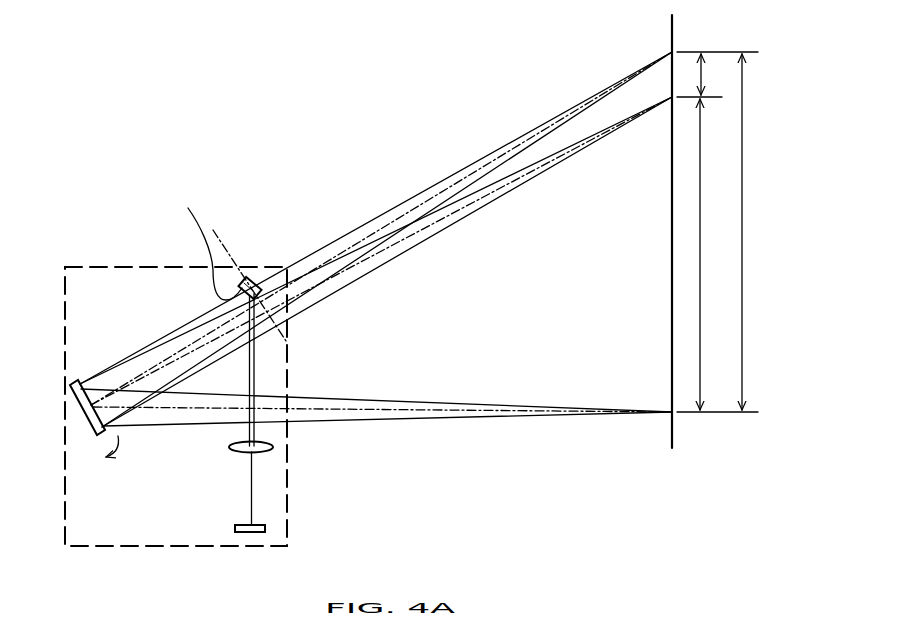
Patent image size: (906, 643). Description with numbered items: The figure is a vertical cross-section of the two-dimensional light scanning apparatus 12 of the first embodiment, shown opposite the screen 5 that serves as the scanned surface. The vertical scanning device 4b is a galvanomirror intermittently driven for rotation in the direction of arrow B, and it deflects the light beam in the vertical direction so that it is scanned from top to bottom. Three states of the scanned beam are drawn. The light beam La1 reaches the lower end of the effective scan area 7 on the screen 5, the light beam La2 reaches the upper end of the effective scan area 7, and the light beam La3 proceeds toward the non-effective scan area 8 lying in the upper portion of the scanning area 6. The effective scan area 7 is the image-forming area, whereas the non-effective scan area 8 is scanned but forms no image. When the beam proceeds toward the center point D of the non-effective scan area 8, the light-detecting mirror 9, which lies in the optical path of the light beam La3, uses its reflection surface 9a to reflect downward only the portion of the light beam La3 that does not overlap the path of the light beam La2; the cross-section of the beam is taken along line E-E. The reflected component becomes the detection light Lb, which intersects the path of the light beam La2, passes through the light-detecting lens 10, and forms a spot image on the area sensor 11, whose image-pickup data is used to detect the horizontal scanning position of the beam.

The light scanning apparatus 12 is at (127, 264).
The screen 5 is at (661, 308).
The center point D is at (664, 47).
The non-effective scan area 8 is at (699, 75).
The scanning area 6 is at (717, 233).
The effective scan area 7 is at (710, 254).
The vertical scanning device 4b is at (79, 374).
The arrow B is at (96, 451).
The light beam La3 is at (221, 315).
The light beam La2 is at (218, 359).
The light beam La1 is at (152, 418).
The light-detecting mirror 9 is at (258, 276).
The reflection surface 9a is at (204, 246).
The line E- E is at (216, 225).
The detection light Lb is at (261, 362).
The light-detecting lens 10 is at (276, 449).
The area sensor 11 is at (269, 528).